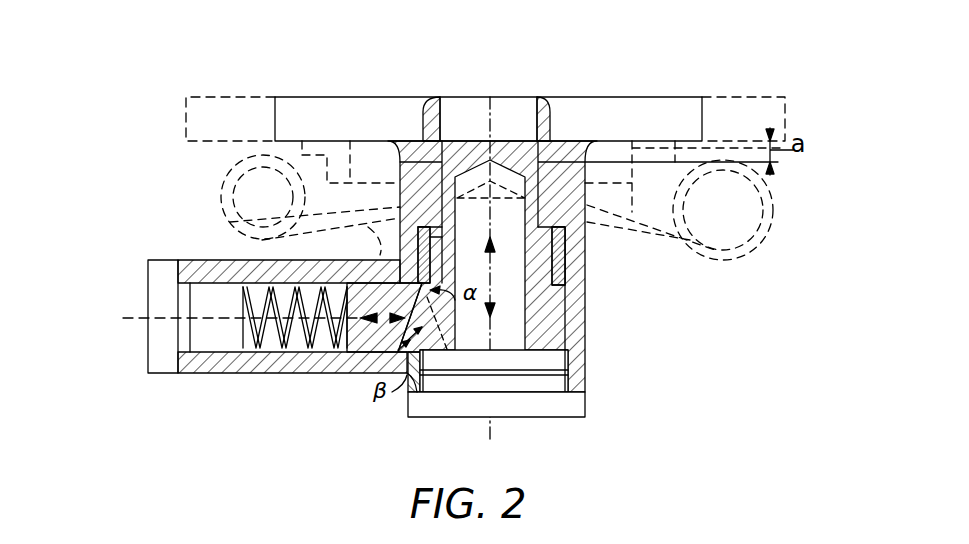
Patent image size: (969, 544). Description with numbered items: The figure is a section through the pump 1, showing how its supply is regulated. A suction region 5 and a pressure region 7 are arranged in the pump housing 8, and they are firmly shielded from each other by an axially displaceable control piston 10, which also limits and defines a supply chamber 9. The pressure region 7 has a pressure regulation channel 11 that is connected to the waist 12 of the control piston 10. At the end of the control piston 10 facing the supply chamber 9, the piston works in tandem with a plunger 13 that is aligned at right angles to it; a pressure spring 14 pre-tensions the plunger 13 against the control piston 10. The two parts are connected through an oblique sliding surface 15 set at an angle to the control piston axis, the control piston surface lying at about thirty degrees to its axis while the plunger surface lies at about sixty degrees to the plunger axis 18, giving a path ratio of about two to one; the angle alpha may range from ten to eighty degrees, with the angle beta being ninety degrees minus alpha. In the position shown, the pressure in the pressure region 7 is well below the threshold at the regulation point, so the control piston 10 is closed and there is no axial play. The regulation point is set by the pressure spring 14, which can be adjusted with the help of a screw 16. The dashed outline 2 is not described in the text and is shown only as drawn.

The pump 1 is at (515, 88).
The first plate 2 is at (333, 117).
The suction region 5 is at (617, 140).
The pressure region 7 is at (368, 157).
The pump housing 8 is at (552, 323).
The supply chamber 9 is at (497, 112).
The control piston 10 is at (567, 327).
The pressure regulation channel 11 is at (400, 192).
The waist 12 is at (568, 238).
The plunger 13 is at (363, 352).
The pressure spring 14 is at (278, 350).
The sliding surface 15 is at (448, 328).
The screw 16 is at (165, 272).
The plunger axis 18 is at (130, 320).